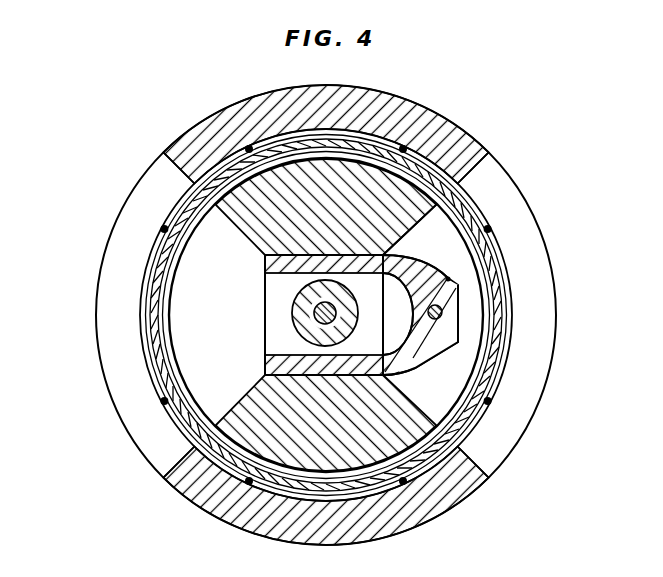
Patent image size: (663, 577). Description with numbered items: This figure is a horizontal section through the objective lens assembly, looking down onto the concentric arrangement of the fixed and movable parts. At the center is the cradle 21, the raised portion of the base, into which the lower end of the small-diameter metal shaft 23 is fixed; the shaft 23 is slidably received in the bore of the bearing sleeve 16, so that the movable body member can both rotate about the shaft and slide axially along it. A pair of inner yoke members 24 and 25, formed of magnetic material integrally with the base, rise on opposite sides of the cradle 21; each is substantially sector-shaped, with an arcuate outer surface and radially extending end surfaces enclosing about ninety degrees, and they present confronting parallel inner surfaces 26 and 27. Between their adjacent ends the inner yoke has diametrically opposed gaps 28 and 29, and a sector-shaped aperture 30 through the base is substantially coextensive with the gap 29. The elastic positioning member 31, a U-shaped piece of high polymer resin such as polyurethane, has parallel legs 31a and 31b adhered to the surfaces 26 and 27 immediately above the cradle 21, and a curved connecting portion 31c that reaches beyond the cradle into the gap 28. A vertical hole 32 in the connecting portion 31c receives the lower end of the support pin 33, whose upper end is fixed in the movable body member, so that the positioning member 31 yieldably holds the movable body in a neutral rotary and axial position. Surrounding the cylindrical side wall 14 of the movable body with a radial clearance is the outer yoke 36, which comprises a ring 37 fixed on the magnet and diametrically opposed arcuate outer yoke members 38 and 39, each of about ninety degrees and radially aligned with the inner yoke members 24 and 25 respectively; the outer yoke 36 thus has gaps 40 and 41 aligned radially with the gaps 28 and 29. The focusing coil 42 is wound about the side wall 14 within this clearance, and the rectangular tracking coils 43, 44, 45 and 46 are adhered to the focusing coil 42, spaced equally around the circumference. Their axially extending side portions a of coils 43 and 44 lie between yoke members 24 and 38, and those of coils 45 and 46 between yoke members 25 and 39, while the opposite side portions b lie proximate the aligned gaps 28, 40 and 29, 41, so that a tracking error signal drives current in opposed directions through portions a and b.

The cylindrical side wall 14 is at (513, 352).
The bearing sleeve 16 is at (298, 297).
The cradle 21 is at (277, 332).
The shaft 23 is at (314, 313).
The inner yoke member 24 is at (478, 447).
The inner yoke member 25 is at (282, 178).
The inner surface 26 is at (300, 354).
The inner surface 27 is at (386, 258).
The gap 28 is at (432, 209).
The gap 29 is at (170, 315).
The sector-shaped aperture 30 is at (150, 283).
The elastic positioning member 31 is at (450, 280).
The leg 31a is at (268, 369).
The leg 31b is at (268, 262).
The curved connecting portion 31c is at (412, 353).
The vertical hole 32 is at (460, 327).
The support pin 33 is at (441, 311).
The outer yoke 36 is at (425, 101).
The ring 37 is at (522, 241).
The outer yoke member 38 is at (225, 505).
The outer yoke member 39 is at (455, 133).
The gap 40 is at (480, 165).
The gap 41 is at (180, 455).
The focusing coil 42 is at (500, 290).
The tracking coil 43 is at (162, 402).
The tracking coil 44 is at (490, 404).
The tracking coil 45 is at (498, 224).
The tracking coil 46 is at (163, 221).
The first side portion a is at (246, 148).
The second side portion b is at (161, 229).